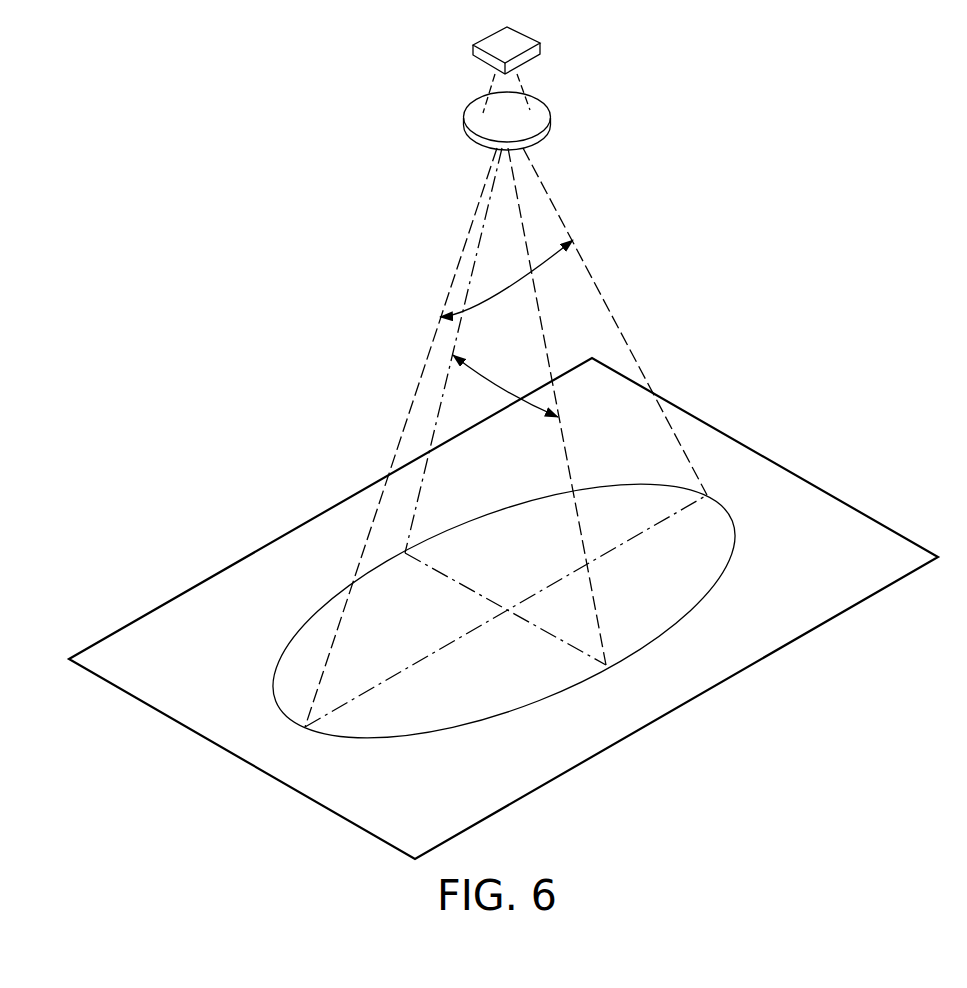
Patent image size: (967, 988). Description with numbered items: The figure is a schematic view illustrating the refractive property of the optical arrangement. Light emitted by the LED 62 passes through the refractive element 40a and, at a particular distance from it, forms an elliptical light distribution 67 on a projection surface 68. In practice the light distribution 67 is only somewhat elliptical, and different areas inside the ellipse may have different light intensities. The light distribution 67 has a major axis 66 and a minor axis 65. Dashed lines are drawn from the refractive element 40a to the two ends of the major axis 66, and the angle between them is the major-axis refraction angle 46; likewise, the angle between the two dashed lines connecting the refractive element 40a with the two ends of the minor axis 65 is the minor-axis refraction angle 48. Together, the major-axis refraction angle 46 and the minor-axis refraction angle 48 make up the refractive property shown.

The LED 62 is at (541, 46).
The refractive element 40a is at (544, 108).
The major-axis refraction angle 46 is at (500, 288).
The minor-axis refraction angle 48 is at (490, 380).
The minor axis 65 is at (542, 632).
The major axis 66 is at (648, 530).
The light distributions 67 is at (686, 619).
The projection surface 68 is at (503, 608).